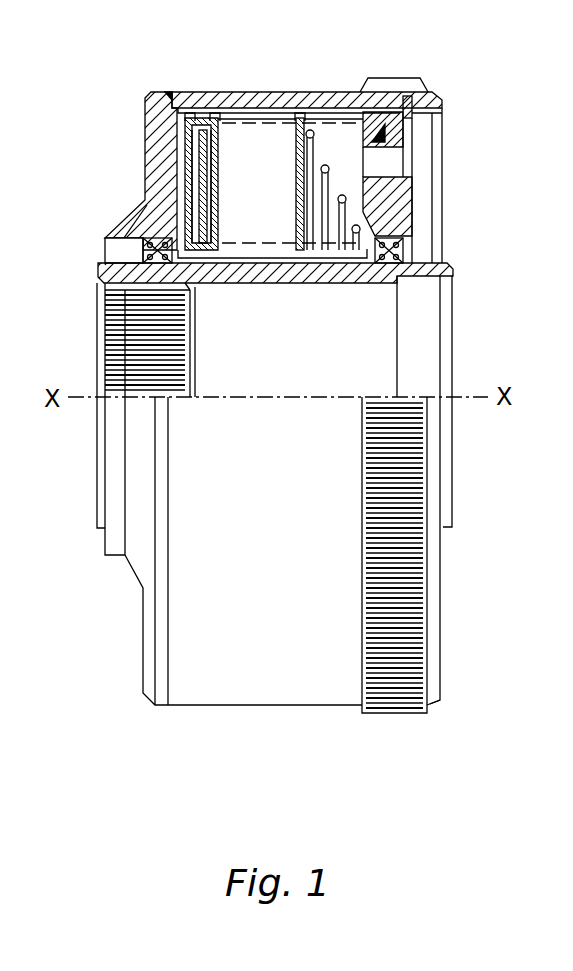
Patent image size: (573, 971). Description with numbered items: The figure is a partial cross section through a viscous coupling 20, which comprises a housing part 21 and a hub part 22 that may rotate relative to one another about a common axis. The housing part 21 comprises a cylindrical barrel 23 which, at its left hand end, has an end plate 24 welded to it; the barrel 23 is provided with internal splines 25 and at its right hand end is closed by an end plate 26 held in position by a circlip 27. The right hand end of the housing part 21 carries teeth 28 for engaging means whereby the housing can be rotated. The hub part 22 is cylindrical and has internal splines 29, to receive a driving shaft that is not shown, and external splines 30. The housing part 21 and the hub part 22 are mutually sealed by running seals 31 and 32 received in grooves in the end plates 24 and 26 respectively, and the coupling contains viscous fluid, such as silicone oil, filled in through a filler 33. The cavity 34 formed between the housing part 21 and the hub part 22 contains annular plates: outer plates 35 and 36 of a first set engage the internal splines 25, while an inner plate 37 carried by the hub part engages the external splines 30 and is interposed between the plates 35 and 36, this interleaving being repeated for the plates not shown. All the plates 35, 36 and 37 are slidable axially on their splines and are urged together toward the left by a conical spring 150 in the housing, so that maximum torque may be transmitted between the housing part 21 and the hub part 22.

The viscous coupling 20 is at (314, 70).
The housing part 21 is at (239, 705).
The hub part 22 is at (110, 275).
The cylindrical barrel 23 is at (198, 98).
The end plate 24 is at (152, 175).
The internal splines 25 is at (254, 110).
The end plate 26 is at (410, 137).
The circlip 27 is at (442, 108).
The teeth 28 is at (405, 78).
The internal splines 29 is at (110, 346).
The external splines 30 is at (285, 259).
The running seal 31 is at (145, 240).
The running seal 32 is at (405, 250).
The filler 33 is at (400, 160).
The cavity 34 is at (276, 196).
The plate 35 is at (190, 138).
The plate 36 is at (208, 158).
The plate 37 is at (201, 232).
The conical spring 150 is at (333, 178).